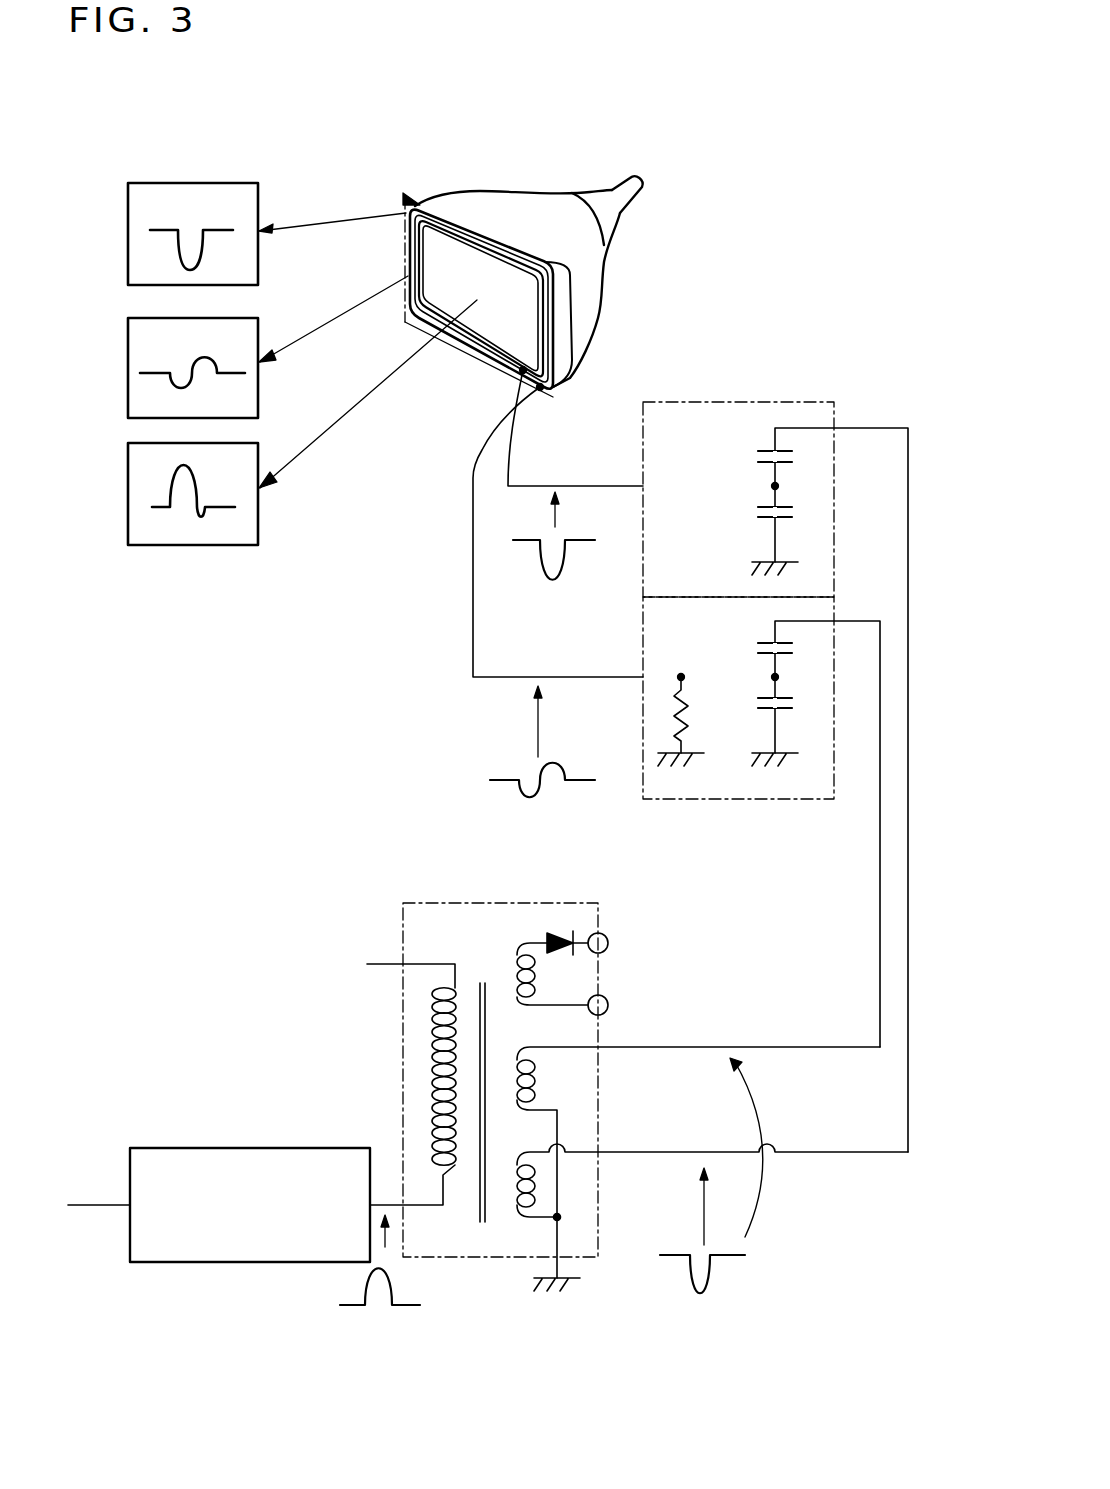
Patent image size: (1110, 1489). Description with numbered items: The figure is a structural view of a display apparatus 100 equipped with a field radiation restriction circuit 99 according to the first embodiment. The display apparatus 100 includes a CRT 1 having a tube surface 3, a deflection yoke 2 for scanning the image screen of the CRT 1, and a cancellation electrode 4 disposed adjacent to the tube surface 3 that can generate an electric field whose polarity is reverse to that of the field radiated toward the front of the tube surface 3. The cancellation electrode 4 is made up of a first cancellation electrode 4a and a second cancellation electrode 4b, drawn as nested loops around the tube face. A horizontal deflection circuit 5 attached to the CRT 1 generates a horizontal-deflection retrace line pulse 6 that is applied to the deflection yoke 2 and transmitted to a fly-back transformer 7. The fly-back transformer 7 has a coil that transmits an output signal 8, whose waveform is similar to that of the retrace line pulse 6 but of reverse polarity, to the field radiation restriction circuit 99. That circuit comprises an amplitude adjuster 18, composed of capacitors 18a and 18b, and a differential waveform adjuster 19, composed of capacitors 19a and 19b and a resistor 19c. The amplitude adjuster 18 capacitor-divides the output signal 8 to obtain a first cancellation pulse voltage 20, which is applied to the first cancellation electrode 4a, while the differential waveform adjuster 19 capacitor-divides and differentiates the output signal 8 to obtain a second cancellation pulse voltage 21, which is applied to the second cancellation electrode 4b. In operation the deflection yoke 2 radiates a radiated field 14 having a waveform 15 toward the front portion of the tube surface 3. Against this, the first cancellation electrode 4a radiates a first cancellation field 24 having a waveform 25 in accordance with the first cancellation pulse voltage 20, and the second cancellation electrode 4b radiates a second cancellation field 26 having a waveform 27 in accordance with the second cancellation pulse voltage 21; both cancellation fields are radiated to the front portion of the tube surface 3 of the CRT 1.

The CRT 1 is at (593, 313).
The deflection yoke 2 is at (620, 236).
The tube surface 3 is at (410, 315).
The cancellation electrode 4 is at (421, 524).
The first cancellation electrode 4a is at (479, 353).
The second cancellation electrode 4b is at (438, 293).
The horizontal deflection circuit 5 is at (250, 1148).
The horizontal-deflection retrace line pulse 6 is at (340, 1292).
The fly-back transformer 7 is at (403, 1033).
The output signal 8 is at (712, 1270).
The radiated field 14 is at (313, 444).
The waveform 15 is at (128, 490).
The amplitude adjuster 18 is at (775, 716).
The capacitor 18a is at (756, 455).
The capacitor 18b is at (756, 517).
The differential waveform adjuster 19 is at (761, 822).
The capacitor 19a is at (756, 646).
The capacitor 19b is at (795, 703).
The resistor 19c is at (703, 728).
The first cancellation pulse voltage 20 is at (583, 543).
The second cancellation pulse voltage 21 is at (495, 780).
The first cancellation field 24 is at (329, 222).
The waveform 25 is at (128, 232).
The second cancellation field 26 is at (313, 330).
The waveform 27 is at (128, 365).
The field radiation restriction circuit 99 is at (806, 398).
The display apparatus 100 is at (777, 152).